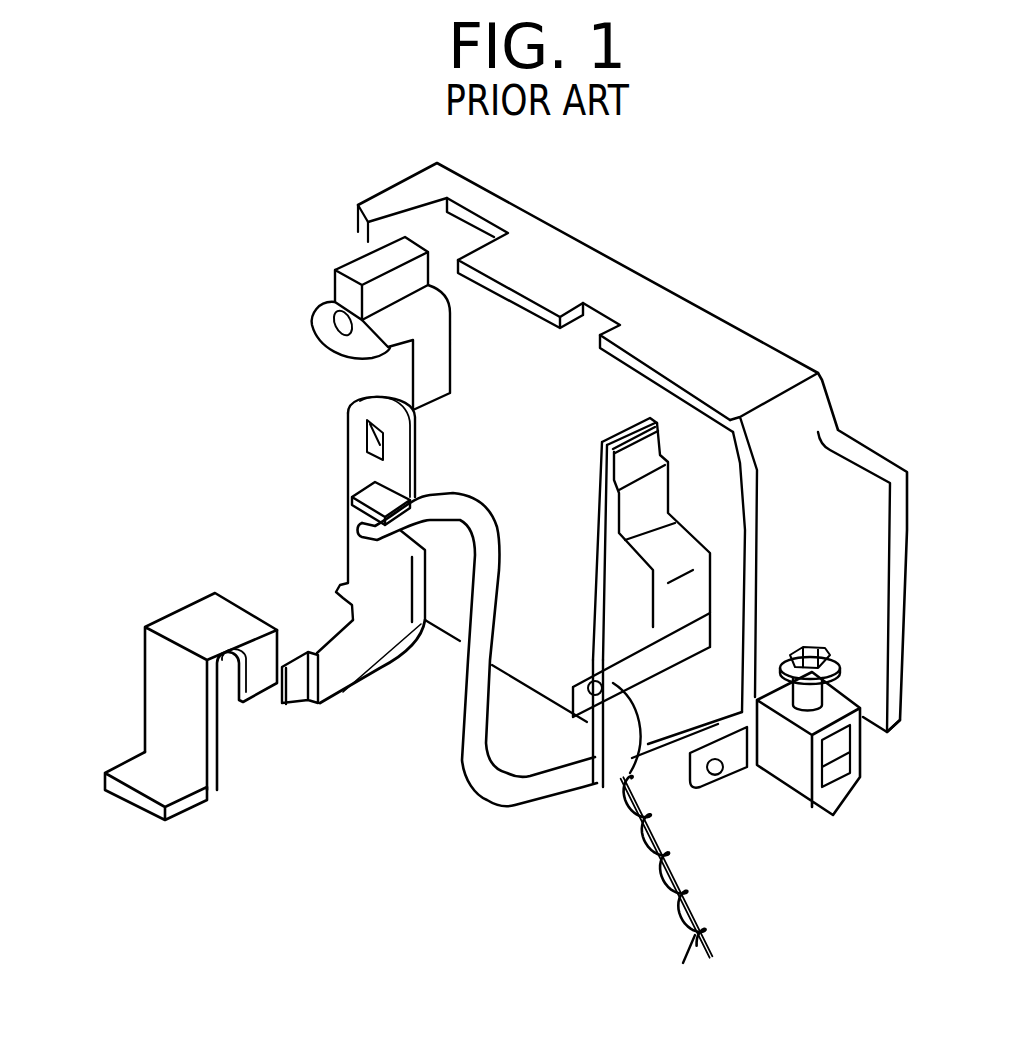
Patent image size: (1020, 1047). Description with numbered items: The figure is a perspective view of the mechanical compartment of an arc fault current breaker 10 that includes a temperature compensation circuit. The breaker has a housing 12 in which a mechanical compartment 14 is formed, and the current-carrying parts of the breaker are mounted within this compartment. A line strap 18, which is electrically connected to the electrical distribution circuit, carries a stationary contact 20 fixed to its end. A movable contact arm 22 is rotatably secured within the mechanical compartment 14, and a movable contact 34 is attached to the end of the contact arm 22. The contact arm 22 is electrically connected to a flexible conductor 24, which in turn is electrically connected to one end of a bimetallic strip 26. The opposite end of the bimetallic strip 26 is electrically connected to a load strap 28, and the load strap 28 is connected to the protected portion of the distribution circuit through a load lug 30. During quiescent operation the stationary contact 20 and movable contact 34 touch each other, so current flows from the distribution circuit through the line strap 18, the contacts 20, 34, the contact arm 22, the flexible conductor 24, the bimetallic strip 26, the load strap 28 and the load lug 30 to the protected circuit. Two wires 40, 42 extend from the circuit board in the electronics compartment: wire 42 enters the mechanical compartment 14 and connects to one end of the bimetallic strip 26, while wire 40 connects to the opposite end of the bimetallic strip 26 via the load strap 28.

The arc fault current breaker 10 is at (259, 891).
The housing 12 is at (797, 354).
The mechanical compartment 14 is at (505, 340).
The line strap 18 is at (131, 809).
The stationary contact 20 is at (243, 705).
The movable contact arm 22 is at (369, 687).
The flexible conductor 24 is at (492, 795).
The bimetallic strip 26 is at (603, 503).
The load strap 28 is at (697, 540).
The load lug 30 is at (862, 762).
The movable contact 34 is at (293, 695).
The wire 40 is at (709, 948).
The wire 42 is at (710, 908).